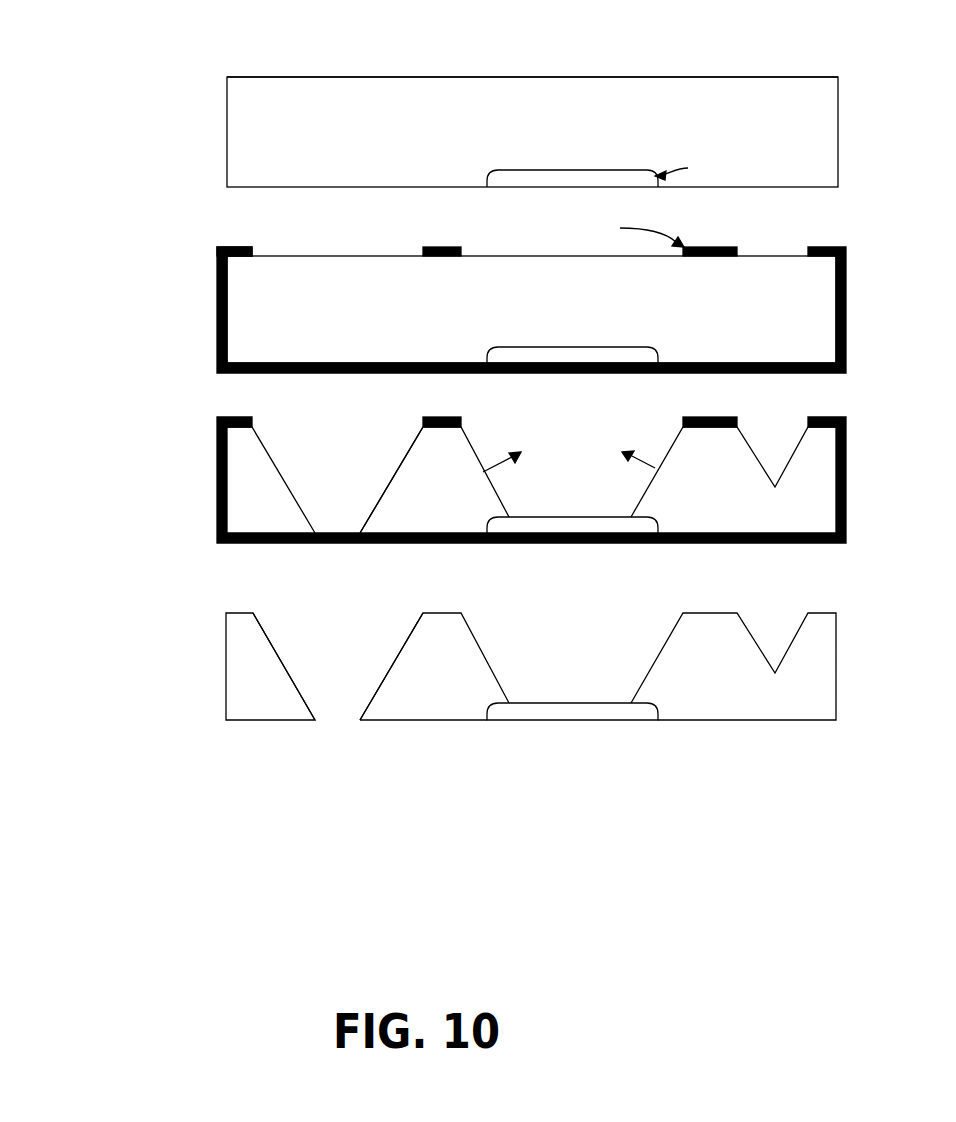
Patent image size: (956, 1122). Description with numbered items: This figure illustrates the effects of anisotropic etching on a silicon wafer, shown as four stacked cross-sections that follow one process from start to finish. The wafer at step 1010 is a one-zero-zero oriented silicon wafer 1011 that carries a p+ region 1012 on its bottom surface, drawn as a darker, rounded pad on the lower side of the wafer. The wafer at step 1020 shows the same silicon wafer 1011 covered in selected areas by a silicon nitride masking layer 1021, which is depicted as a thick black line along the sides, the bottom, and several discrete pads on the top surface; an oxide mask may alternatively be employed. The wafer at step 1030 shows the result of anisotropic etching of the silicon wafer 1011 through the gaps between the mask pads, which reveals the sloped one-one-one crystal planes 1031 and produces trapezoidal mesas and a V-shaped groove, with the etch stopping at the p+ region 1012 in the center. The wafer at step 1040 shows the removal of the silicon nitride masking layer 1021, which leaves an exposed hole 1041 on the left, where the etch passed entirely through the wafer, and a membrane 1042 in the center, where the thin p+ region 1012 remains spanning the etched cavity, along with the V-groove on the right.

The step 1010 is at (227, 140).
The (100) silicon wafer 1011 is at (473, 76).
The p+ region 1012 is at (530, 183).
The step 1020 is at (208, 330).
The silicon nitride masking layer 1021 is at (220, 270).
The step 1030 is at (200, 505).
The 111 planes 1031 is at (405, 453).
The step 1040 is at (206, 673).
The hole 1041 is at (343, 727).
The membrane 1042 is at (553, 727).